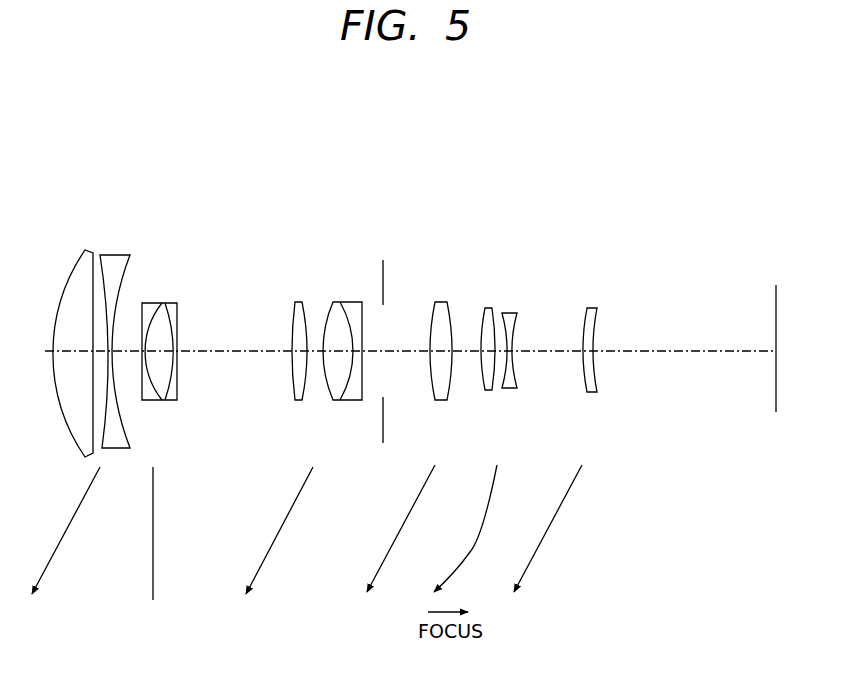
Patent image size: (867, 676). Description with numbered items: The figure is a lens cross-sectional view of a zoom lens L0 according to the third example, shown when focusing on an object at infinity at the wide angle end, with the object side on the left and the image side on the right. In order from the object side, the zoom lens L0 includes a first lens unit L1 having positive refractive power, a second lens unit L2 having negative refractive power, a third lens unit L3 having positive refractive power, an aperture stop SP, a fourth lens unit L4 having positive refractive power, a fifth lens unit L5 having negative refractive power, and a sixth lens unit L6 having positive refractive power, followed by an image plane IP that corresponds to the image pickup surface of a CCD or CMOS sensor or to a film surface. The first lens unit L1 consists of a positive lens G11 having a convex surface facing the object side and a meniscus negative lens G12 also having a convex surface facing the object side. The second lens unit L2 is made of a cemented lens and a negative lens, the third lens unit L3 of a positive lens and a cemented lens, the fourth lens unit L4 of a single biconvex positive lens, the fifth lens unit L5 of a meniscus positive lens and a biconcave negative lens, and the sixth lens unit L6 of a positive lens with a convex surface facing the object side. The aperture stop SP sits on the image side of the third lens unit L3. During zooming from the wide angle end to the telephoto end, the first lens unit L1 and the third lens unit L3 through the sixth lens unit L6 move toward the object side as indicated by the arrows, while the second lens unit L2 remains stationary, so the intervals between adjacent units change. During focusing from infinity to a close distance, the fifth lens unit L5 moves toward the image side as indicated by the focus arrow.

The zoom lens L0 is at (602, 135).
The first lens unit L1 is at (132, 189).
The positive lens G11 is at (85, 254).
The meniscus negative lens G12 is at (110, 253).
The second lens unit L2 is at (192, 201).
The third lens unit L3 is at (383, 201).
The fourth lens unit L4 is at (473, 201).
The fifth lens unit L5 is at (522, 201).
The sixth lens unit L6 is at (602, 201).
The aperture stop SP is at (388, 258).
The image plane IP is at (768, 288).